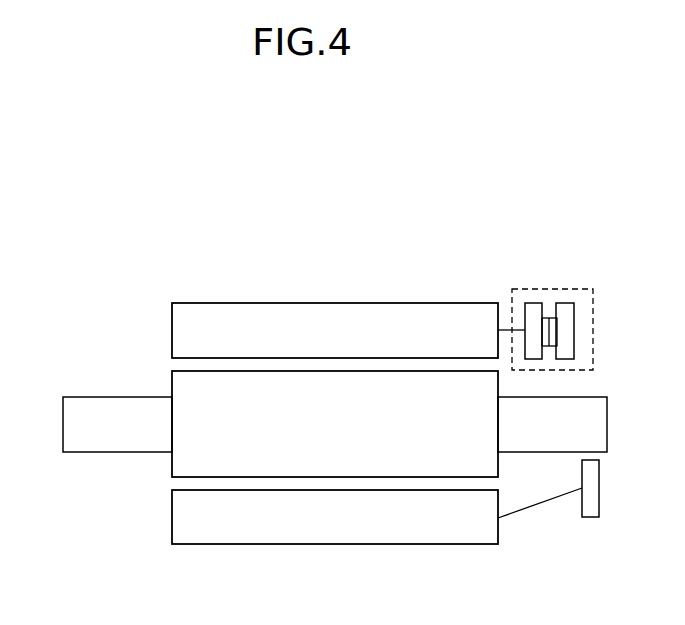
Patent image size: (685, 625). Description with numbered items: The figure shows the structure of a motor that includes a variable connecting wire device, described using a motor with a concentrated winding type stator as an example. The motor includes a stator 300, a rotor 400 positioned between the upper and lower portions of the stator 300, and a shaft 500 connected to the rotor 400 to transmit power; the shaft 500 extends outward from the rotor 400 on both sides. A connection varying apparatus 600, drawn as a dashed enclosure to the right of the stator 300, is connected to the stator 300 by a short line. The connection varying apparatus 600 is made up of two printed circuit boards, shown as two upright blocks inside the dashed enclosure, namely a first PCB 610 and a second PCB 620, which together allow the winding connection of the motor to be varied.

The stator 300 is at (335, 428).
The rotor 400 is at (308, 433).
The shaft 500 is at (117, 401).
The connection varying apparatus 600 is at (576, 308).
The first PCB 610 is at (609, 330).
The second PCB 620 is at (524, 303).